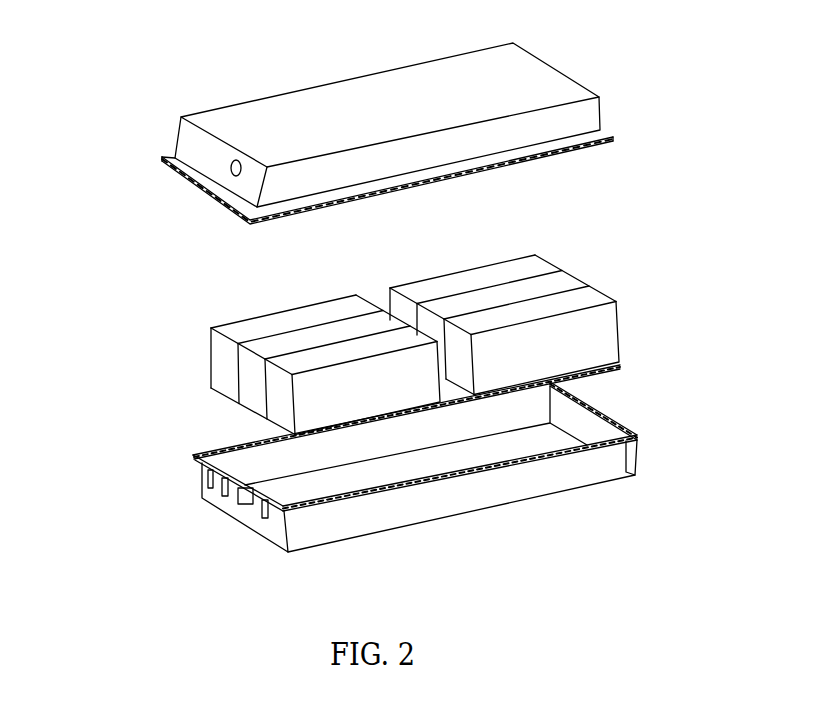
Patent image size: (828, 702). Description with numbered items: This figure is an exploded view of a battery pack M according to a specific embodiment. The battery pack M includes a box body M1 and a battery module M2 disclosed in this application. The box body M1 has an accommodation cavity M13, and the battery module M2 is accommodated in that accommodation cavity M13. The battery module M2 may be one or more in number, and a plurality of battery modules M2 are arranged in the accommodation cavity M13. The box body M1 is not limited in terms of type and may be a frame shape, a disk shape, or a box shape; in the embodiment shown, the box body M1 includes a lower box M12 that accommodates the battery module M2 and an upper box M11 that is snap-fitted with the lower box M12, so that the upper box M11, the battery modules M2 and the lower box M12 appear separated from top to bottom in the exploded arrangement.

The battery pack M is at (126, 83).
The box body M1 is at (113, 209).
The upper box M11 is at (190, 162).
The lower box M12 is at (191, 456).
The accommodation cavity M13 is at (560, 437).
The battery module M2 is at (565, 285).